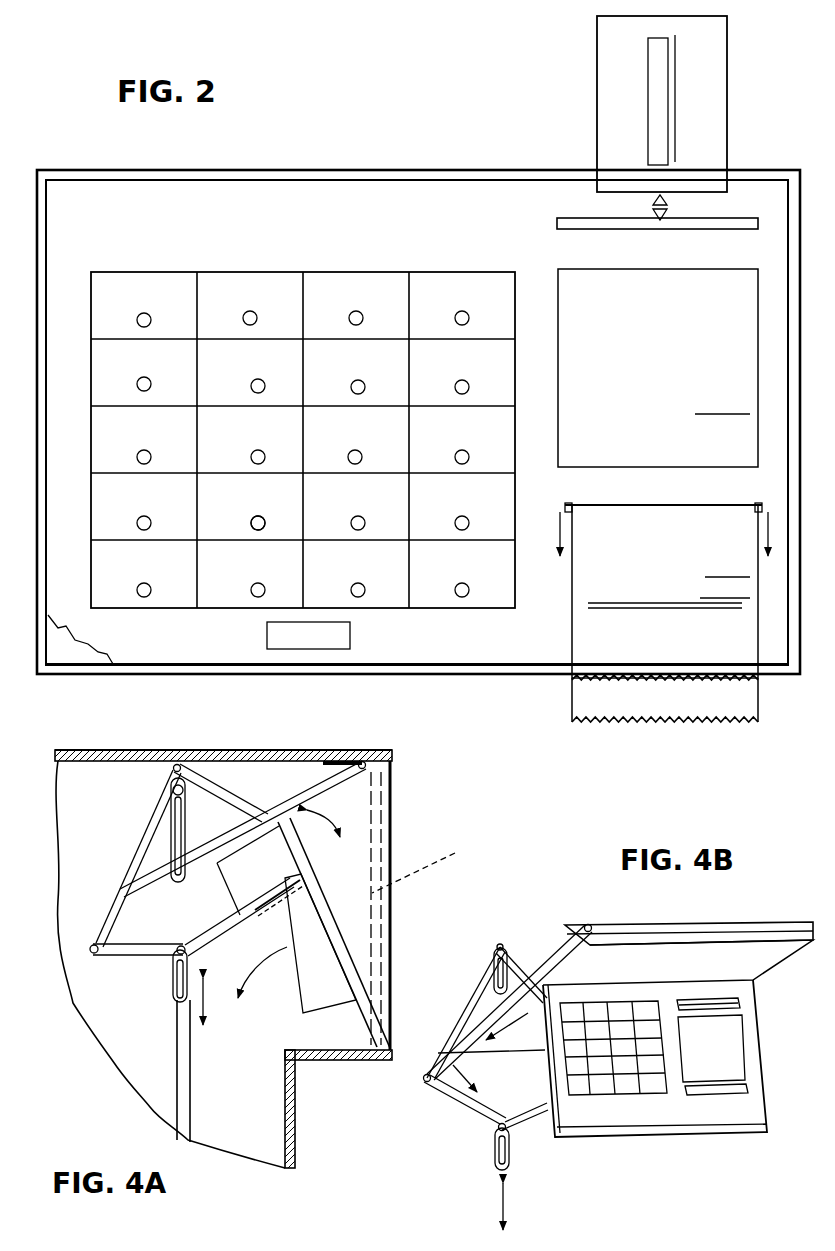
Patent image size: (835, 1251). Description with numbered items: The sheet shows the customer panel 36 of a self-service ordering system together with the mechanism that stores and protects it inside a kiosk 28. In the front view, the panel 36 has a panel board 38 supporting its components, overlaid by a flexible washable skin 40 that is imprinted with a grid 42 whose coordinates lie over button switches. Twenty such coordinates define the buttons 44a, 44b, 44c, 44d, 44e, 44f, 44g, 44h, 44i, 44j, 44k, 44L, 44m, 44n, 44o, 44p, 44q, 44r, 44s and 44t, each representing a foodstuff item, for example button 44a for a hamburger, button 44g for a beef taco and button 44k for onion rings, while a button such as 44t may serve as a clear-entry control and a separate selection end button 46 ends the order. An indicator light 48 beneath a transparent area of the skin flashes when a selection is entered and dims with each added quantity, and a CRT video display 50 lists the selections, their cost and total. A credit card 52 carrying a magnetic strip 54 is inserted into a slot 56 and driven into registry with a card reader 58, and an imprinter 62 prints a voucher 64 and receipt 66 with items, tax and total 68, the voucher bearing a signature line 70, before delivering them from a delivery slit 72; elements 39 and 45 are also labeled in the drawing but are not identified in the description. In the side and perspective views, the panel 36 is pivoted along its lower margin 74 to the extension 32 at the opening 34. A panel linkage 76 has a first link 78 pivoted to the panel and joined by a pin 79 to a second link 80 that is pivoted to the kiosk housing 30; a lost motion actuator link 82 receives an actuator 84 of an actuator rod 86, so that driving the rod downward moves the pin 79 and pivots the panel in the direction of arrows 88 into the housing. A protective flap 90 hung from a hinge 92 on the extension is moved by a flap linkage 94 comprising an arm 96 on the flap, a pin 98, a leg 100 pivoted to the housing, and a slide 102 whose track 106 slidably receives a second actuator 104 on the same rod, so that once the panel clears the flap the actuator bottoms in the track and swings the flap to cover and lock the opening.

In FIG. 4A, the kiosk 28 is at (199, 743).
In FIG. 4A, the kiosk housing 30 is at (298, 1100).
In FIG. 4A, the extension 32 is at (345, 752).
In FIG. 4A, the opening 34 is at (397, 855).
In FIG. 2, the panel 36 is at (400, 163).
In FIG. 4A, the panel 36 is at (323, 897).
In FIG. 2, the panel board 38 is at (76, 653).
In FIG. 4A, the panel frame member 39 is at (335, 947).
In FIG. 2, the flexible skin 40 is at (148, 652).
In FIG. 2, the grid 42 is at (414, 256).
In FIG. 2, the button 44a is at (103, 270).
In FIG. 2, the button 44b is at (207, 271).
In FIG. 2, the button 44c is at (312, 275).
In FIG. 2, the button 44d is at (462, 275).
In FIG. 2, the button 44e is at (104, 349).
In FIG. 2, the button 44f is at (234, 393).
In FIG. 2, the button 44g is at (340, 396).
In FIG. 2, the button 44h is at (446, 398).
In FIG. 2, the button 44i is at (104, 430).
In FIG. 2, the button 44j is at (234, 467).
In FIG. 2, the button 44k is at (340, 467).
In FIG. 2, the button 44L is at (470, 432).
In FIG. 2, the button 44m is at (162, 500).
In FIG. 2, the button 44n is at (266, 500).
In FIG. 2, the button 44o is at (372, 500).
In FIG. 2, the button 44p is at (474, 500).
In FIG. 2, the button 44q is at (162, 569).
In FIG. 2, the button 44r is at (264, 566).
In FIG. 2, the button 44s is at (372, 566).
In FIG. 2, the button 44t is at (474, 566).
In FIG. 2, the key button 45 is at (251, 523).
In FIG. 2, the selection end button 46 is at (352, 636).
In FIG. 2, the indicator light 48 is at (137, 317).
In FIG. 2, the CRT video display 50 is at (656, 455).
In FIG. 4B, the CRT video display 50 is at (730, 1062).
In FIG. 2, the credit card 52 is at (607, 80).
In FIG. 2, the magnetic strip 54 is at (657, 37).
In FIG. 2, the slot 56 is at (748, 222).
In FIG. 4B, the slot 56 is at (733, 1008).
In FIG. 4A, the card reader 58 is at (262, 865).
In FIG. 4A, the imprinter 62 is at (315, 997).
In FIG. 2, the voucher 64 is at (585, 644).
In FIG. 2, the receipt 66 is at (737, 705).
In FIG. 2, the total 68 is at (740, 598).
In FIG. 2, the signature line 70 is at (612, 603).
In FIG. 2, the delivery slit 72 is at (565, 507).
In FIG. 4B, the delivery slit 72 is at (737, 1093).
In FIG. 4A, the lower margin 74 is at (390, 1030).
In FIG. 4B, the lower margin 74 is at (667, 1135).
In FIG. 4A, the panel linkage 76 is at (127, 956).
In FIG. 4B, the panel linkage 76 is at (480, 1128).
In FIG. 4B, the first link 78 is at (540, 1125).
In FIG. 4B, the pin 79 is at (516, 1130).
In FIG. 4B, the second link 80 is at (443, 1090).
In FIG. 4B, the lost motion actuator link 82 is at (512, 1155).
In FIG. 4A, the actuator 84 is at (171, 968).
In FIG. 4B, the actuator 84 is at (497, 1162).
In FIG. 4A, the actuator rod 86 is at (180, 1070).
In FIG. 4A, the arrows 88 is at (287, 948).
In FIG. 4B, the arrows 88 is at (560, 1048).
In FIG. 4A, the protective flap 90 is at (290, 793).
In FIG. 4B, the protective flap 90 is at (583, 925).
In FIG. 4A, the hinge 92 is at (392, 766).
In FIG. 4B, the hinge 92 is at (710, 927).
In FIG. 4A, the flap linkage 94 is at (157, 777).
In FIG. 4A, the arm 96 is at (233, 782).
In FIG. 4A, the pin 98 is at (178, 752).
In FIG. 4A, the leg 100 is at (135, 858).
In FIG. 4B, the leg 100 is at (470, 988).
In FIG. 4A, the slide 102 is at (173, 848).
In FIG. 4B, the slide 102 is at (490, 980).
In FIG. 4A, the second actuator 104 is at (183, 770).
In FIG. 4A, the track 106 is at (180, 832).
In FIG. 4B, the track 106 is at (510, 970).